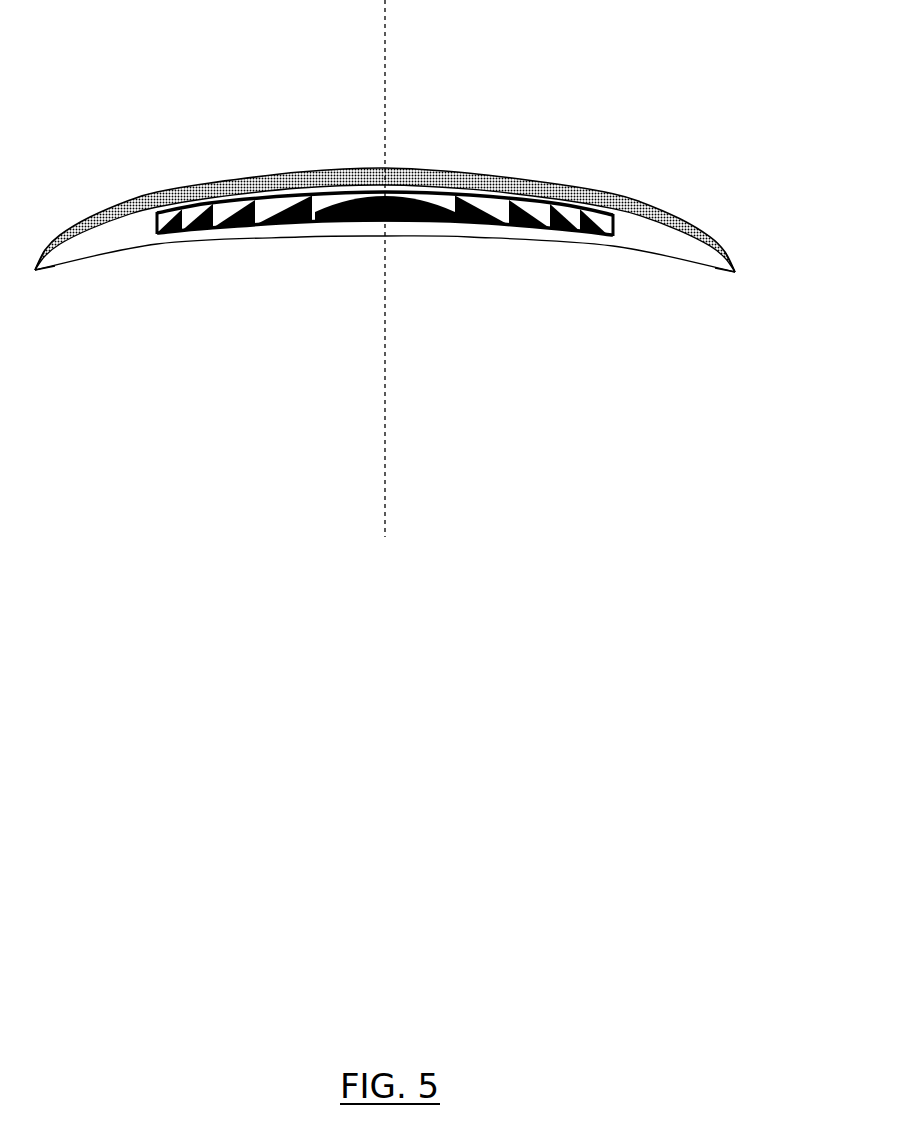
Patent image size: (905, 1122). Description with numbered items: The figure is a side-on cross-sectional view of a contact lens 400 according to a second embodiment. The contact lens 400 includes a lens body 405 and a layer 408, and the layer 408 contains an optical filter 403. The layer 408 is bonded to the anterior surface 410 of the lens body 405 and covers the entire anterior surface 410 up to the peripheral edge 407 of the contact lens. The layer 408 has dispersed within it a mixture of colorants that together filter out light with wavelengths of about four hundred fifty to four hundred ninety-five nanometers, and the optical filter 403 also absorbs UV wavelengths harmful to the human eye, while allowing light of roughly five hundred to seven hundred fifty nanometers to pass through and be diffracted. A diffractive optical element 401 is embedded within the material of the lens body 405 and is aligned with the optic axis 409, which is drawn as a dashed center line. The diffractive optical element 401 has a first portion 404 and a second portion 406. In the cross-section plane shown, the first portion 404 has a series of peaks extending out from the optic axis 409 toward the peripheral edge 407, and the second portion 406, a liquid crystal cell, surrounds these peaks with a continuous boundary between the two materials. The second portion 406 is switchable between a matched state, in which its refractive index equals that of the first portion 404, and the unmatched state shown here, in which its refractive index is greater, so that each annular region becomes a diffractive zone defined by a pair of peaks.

The contact lens 400 is at (200, 121).
The diffractive optical element 401 is at (403, 218).
The optical filter 403 is at (498, 178).
The first portion 404 is at (475, 220).
The lens body 405 is at (665, 245).
The second portion 406 is at (322, 203).
The peripheral edge 407 is at (35, 270).
The layer 408 is at (593, 193).
The optic axis 409 is at (386, 450).
The anterior surface 410 is at (693, 230).